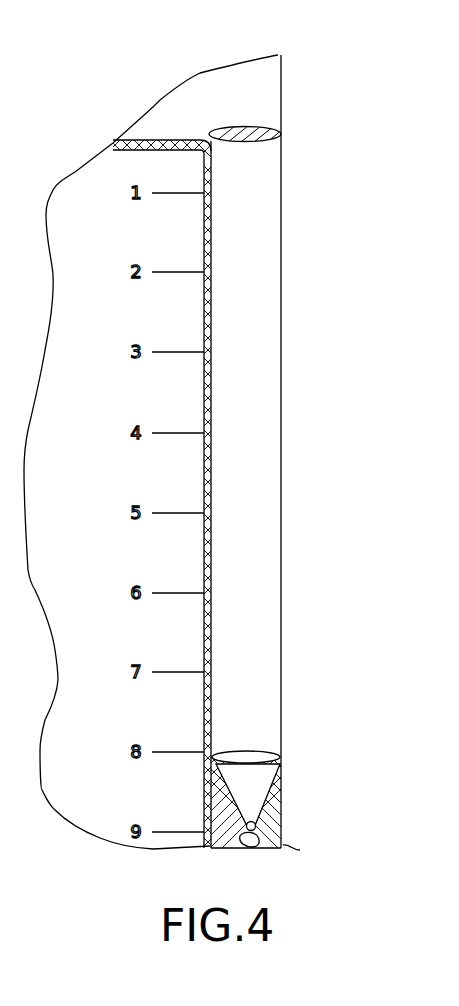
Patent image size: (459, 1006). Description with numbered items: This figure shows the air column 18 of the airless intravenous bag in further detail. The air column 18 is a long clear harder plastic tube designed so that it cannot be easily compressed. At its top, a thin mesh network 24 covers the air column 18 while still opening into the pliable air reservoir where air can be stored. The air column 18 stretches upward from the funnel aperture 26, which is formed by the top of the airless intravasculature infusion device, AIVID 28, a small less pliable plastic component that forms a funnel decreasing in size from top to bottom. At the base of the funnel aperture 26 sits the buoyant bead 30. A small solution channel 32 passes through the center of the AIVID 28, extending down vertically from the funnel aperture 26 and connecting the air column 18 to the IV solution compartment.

The air column 18 is at (257, 393).
The mesh network 24 is at (281, 132).
The funnel aperture 26 is at (280, 768).
The airless intravasculature infusion device (AIVID) 28 is at (285, 792).
The buoyant bead 30 is at (285, 829).
The solution channel 32 is at (275, 843).